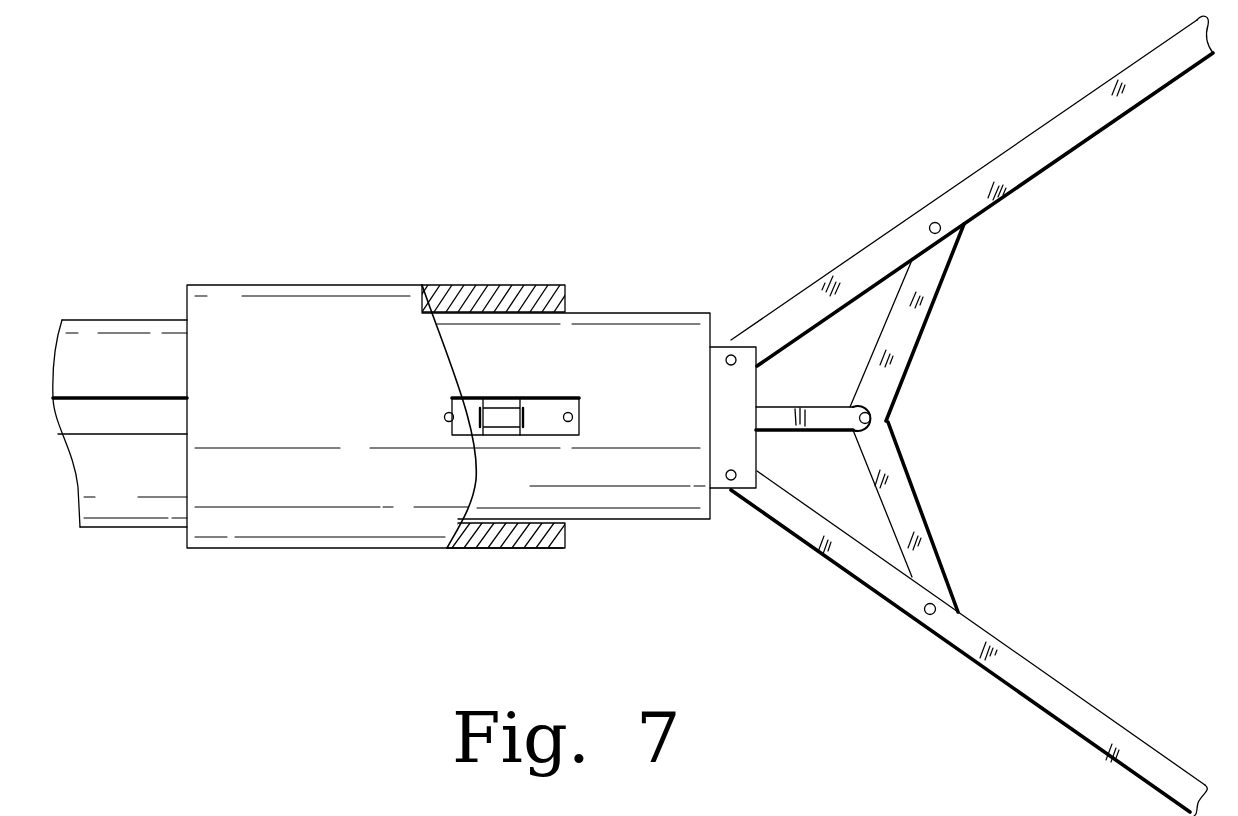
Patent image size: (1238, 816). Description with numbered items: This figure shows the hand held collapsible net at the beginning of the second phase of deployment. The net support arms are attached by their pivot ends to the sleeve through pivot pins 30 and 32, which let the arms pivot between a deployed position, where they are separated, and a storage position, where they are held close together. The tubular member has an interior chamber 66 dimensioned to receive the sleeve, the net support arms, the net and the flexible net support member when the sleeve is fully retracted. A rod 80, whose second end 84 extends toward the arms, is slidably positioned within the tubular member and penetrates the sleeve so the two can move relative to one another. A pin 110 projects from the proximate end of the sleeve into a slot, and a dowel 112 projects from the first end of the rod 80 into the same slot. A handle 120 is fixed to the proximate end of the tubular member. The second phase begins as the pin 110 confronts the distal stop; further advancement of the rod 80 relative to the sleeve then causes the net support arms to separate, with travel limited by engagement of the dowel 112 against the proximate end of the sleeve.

The pivot pin 30 is at (731, 346).
The pivot pin 32 is at (733, 495).
The interior chamber 66 is at (551, 283).
The rod 80 is at (470, 399).
The second end 84 is at (812, 406).
The pin 110 is at (444, 415).
The dowel 112 is at (574, 417).
The handle 120 is at (514, 550).